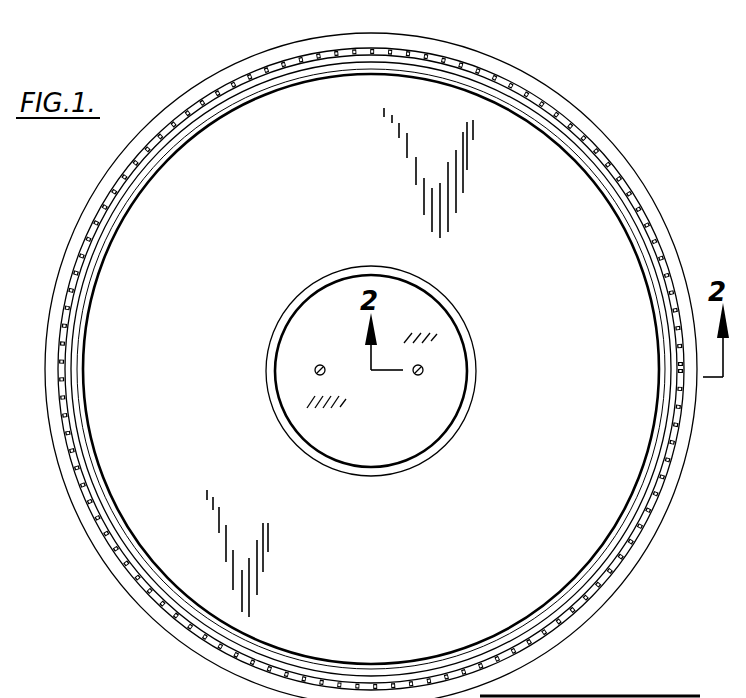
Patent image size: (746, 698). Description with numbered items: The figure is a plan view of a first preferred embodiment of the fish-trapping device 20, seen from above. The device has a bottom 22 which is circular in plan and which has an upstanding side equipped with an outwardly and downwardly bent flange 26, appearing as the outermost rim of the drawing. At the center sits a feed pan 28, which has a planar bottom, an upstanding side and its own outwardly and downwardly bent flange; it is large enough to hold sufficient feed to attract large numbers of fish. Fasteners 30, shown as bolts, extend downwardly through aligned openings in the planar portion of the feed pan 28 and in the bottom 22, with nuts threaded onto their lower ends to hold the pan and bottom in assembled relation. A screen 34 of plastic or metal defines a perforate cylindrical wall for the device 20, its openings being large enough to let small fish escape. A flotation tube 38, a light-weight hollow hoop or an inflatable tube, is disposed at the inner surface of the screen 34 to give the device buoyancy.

The fish-trapping device 20 is at (643, 674).
The bottom 22 is at (585, 545).
The flange 26 is at (628, 181).
The feed pan 28 is at (458, 382).
The fasteners 30 is at (413, 375).
The screen 34 is at (655, 500).
The flotation tube 38 is at (627, 223).